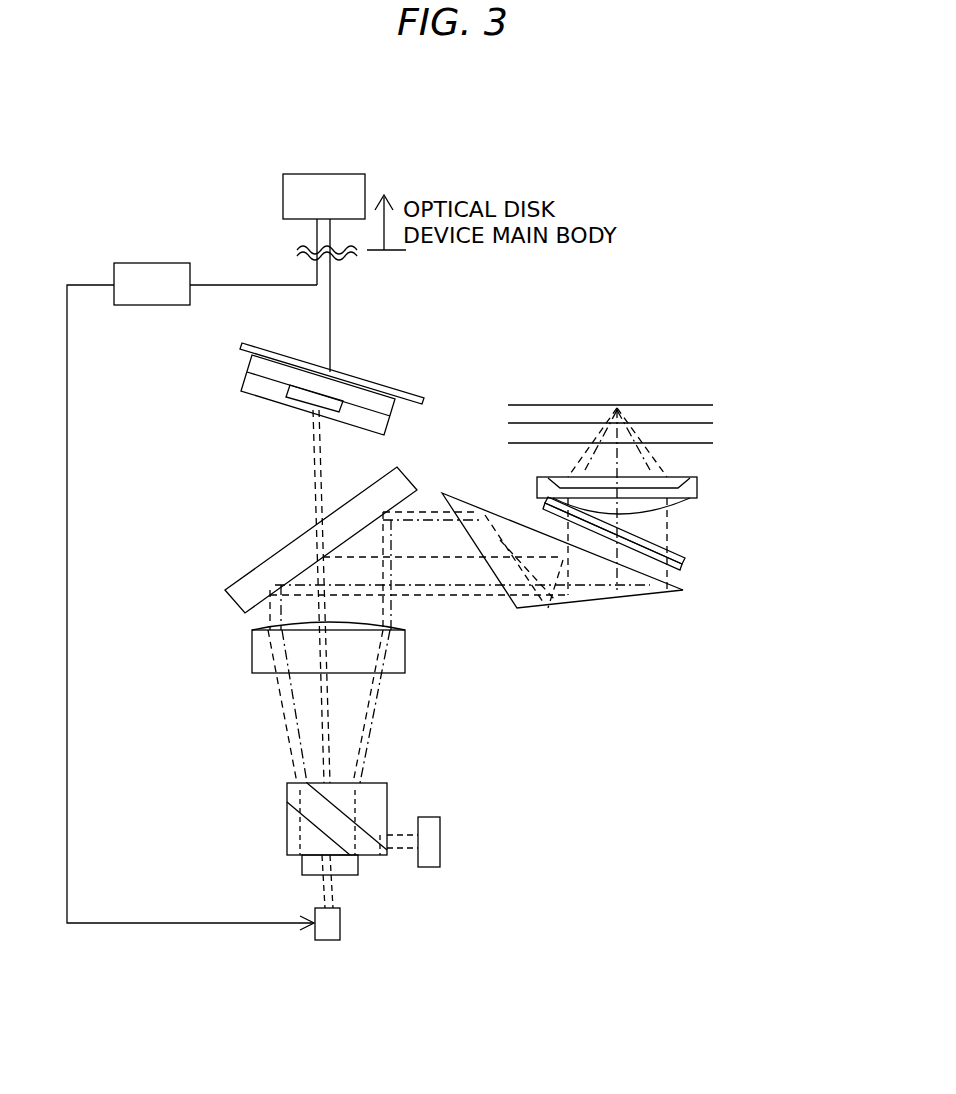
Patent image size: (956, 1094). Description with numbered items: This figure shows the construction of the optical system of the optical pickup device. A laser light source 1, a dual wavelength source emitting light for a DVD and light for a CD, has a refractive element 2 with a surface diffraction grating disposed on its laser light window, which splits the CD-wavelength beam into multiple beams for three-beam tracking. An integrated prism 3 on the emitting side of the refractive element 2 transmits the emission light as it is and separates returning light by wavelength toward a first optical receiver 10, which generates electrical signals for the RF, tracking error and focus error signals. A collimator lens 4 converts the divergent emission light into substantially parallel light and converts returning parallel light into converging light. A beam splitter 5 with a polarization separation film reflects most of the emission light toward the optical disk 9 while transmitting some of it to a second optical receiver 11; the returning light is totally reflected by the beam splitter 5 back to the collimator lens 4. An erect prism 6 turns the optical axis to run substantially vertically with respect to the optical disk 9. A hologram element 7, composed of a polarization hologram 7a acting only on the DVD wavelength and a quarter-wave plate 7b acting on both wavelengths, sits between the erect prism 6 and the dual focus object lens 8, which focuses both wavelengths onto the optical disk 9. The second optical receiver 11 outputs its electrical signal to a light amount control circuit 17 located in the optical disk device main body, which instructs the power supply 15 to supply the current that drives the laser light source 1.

The laser light source 1 is at (313, 930).
The refractive element 2 is at (302, 865).
The integrated prism 3 is at (287, 822).
The collimator lens 4 is at (252, 647).
The beam splitter 5 is at (263, 562).
The erect prism 6 is at (517, 608).
The hologram element 7 is at (691, 603).
The polarization hologram 7a is at (685, 565).
The quarter-wave plate 7b is at (683, 555).
The object lens 8 is at (702, 490).
The optical disk 9 is at (678, 405).
The first optical receiver 10 is at (440, 832).
The second optical receiver 11 is at (253, 375).
The power supply 15 is at (167, 263).
The light amount control circuit 17 is at (312, 174).